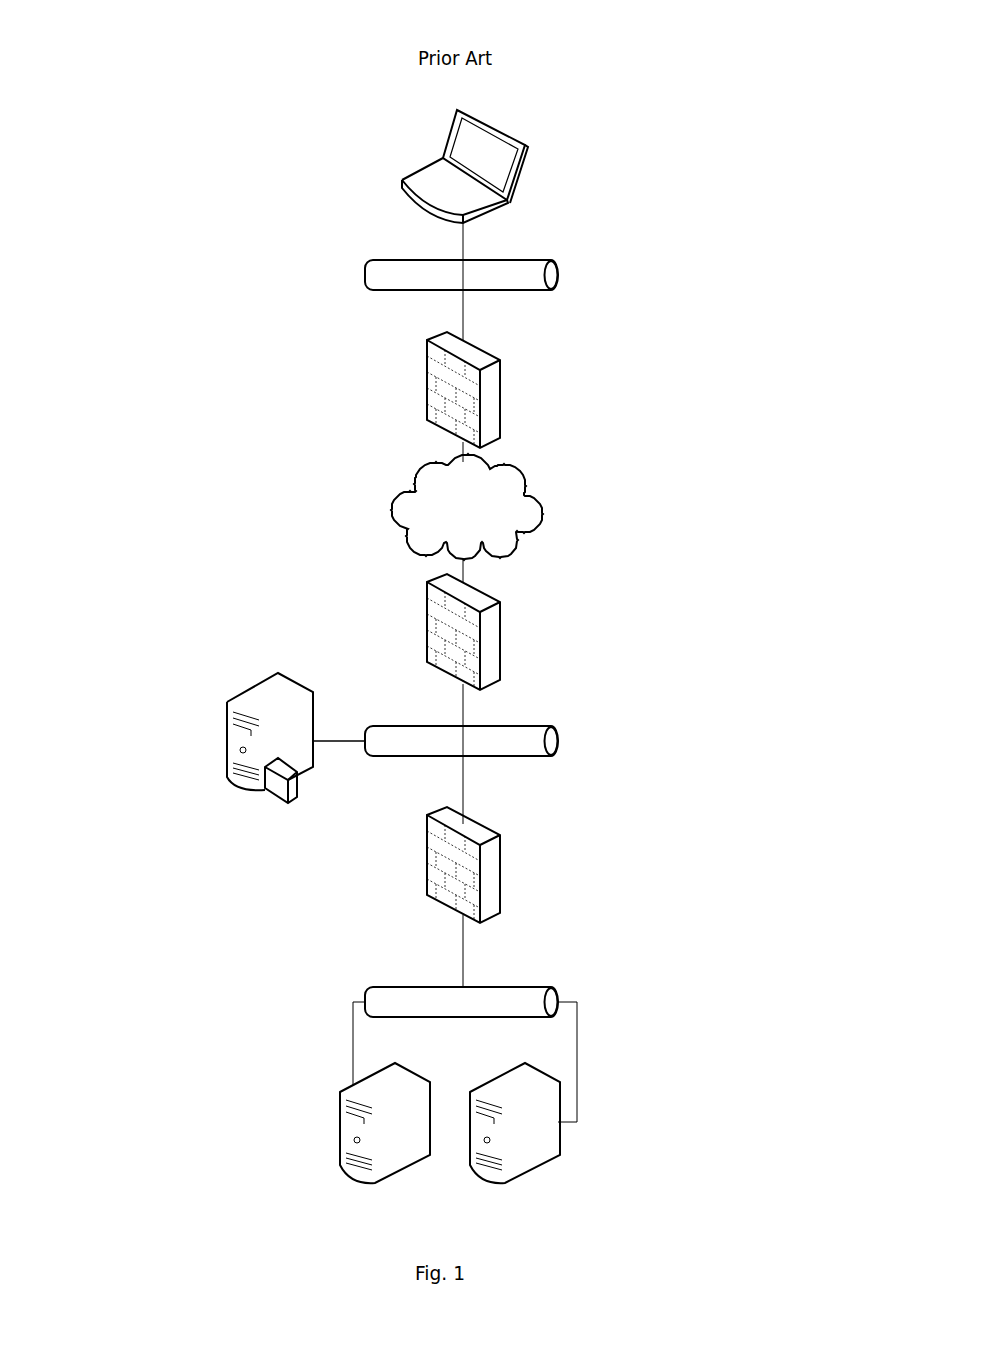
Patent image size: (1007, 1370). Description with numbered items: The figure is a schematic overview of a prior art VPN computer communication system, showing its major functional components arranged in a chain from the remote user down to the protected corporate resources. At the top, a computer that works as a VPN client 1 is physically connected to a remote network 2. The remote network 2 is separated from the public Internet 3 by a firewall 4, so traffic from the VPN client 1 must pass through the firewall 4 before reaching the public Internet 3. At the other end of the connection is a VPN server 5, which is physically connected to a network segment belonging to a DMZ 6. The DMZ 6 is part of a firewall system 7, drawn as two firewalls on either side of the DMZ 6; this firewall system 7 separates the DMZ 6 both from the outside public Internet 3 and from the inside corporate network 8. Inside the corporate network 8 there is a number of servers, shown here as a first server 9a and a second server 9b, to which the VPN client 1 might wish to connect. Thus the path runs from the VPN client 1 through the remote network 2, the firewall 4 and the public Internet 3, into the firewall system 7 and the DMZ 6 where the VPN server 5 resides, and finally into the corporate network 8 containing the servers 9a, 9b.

The VPN client 1 is at (417, 142).
The remote network 2 is at (626, 206).
The public Internet 3 is at (598, 433).
The firewall 4 is at (525, 392).
The VPN server 5 is at (213, 700).
The DMZ 6 is at (417, 767).
The firewall system 7 is at (520, 637).
The corporate network 8 is at (612, 922).
The server 9a is at (342, 1182).
The server 9b is at (542, 1180).